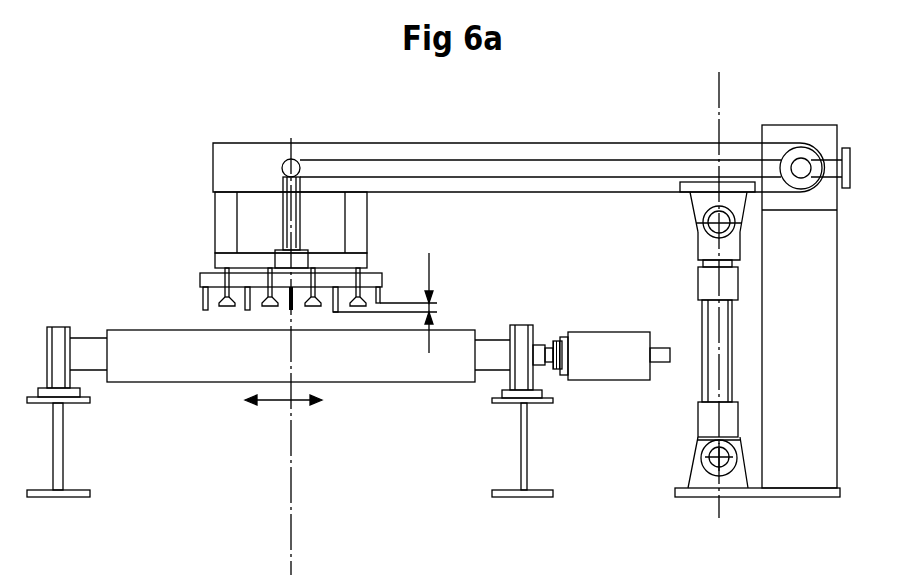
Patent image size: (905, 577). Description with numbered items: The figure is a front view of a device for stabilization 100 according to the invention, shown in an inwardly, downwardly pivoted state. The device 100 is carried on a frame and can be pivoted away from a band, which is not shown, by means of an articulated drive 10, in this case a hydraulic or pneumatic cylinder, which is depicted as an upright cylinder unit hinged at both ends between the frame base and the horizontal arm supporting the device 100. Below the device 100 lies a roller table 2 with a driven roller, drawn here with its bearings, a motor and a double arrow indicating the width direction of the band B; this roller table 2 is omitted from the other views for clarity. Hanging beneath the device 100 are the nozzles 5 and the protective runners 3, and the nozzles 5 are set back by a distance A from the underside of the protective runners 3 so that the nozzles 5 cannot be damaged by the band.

The device for stabilization 100 is at (668, 97).
The articulated drive 10 is at (705, 373).
The roller table 2 is at (160, 392).
The protective runner 3 is at (247, 303).
The nozzle 5 is at (313, 300).
The distance A is at (438, 303).
The width direction of the band B is at (277, 400).